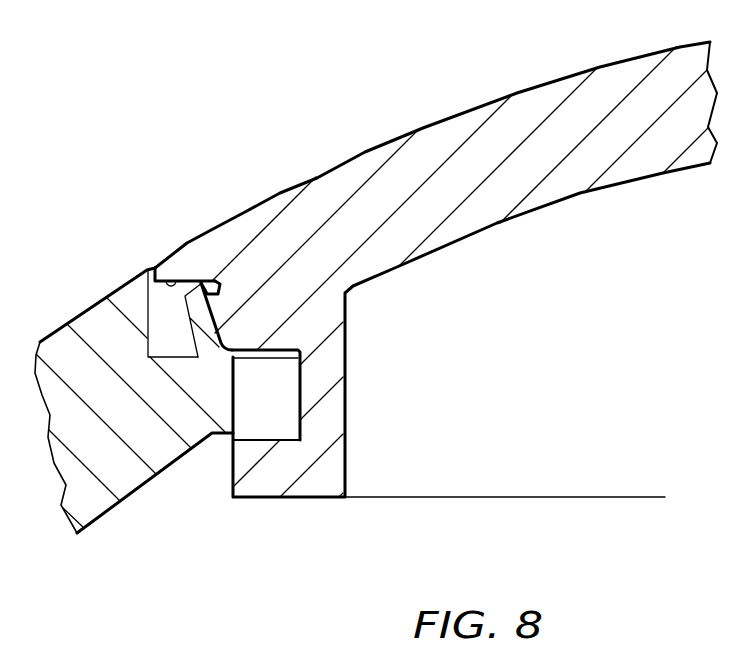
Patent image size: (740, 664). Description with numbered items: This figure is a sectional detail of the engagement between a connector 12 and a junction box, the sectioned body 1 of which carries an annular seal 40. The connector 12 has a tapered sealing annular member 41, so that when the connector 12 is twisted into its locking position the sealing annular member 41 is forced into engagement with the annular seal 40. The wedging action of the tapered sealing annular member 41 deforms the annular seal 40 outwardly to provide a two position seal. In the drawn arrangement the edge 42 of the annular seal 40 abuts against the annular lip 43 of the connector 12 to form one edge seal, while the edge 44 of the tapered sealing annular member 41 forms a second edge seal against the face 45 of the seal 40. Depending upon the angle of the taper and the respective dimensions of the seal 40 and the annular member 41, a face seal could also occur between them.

The body panel 1 is at (114, 521).
The connector 12 is at (437, 106).
The annular seal 40 is at (150, 334).
The tapered sealing annular member 41 is at (227, 345).
The edge of annular seal 42 is at (203, 280).
The annular lip 43 is at (182, 280).
The edge of tapered sealing annular member 44 is at (216, 281).
The face of seal 45 is at (233, 340).